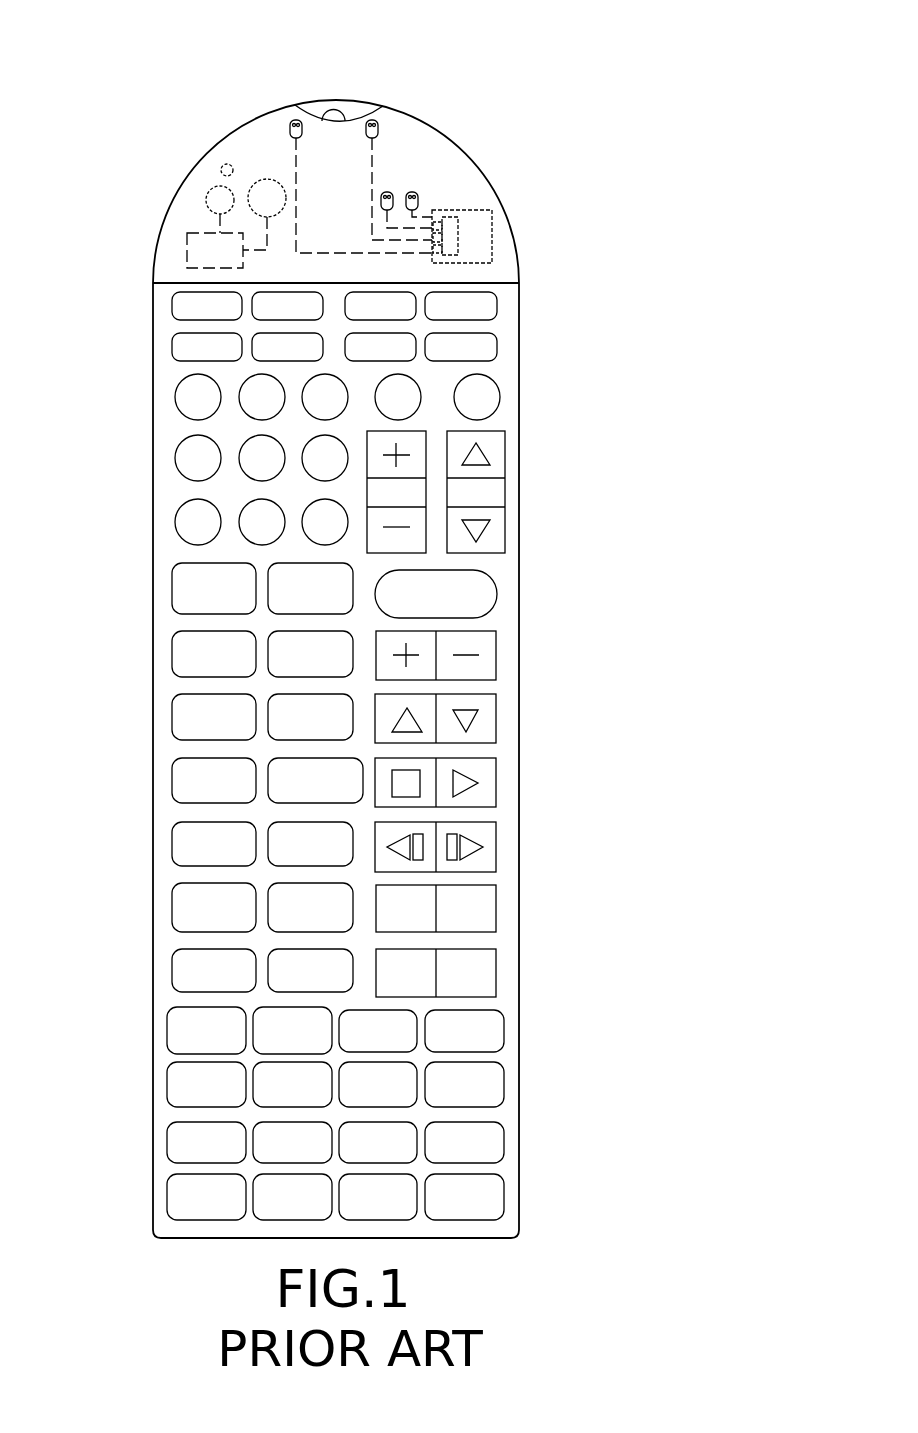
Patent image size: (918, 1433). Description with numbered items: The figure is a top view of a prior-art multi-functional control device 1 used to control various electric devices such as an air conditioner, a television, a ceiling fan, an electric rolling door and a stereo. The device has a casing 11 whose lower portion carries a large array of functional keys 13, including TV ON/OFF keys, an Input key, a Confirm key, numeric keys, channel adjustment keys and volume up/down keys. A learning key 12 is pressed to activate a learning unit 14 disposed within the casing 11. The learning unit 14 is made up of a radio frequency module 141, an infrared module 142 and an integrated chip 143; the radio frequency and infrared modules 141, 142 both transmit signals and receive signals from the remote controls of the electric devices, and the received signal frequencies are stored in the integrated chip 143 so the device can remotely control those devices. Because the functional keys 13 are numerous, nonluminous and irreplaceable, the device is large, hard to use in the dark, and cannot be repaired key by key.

The multi-functional control device 1 is at (150, 208).
The casing 11 is at (168, 545).
The learning key 12 is at (510, 173).
The functional keys 13 is at (340, 834).
The learning unit 14 is at (387, 134).
The radio frequency module 141 is at (412, 192).
The infrared module 142 is at (365, 120).
The integrated chip 143 is at (456, 238).